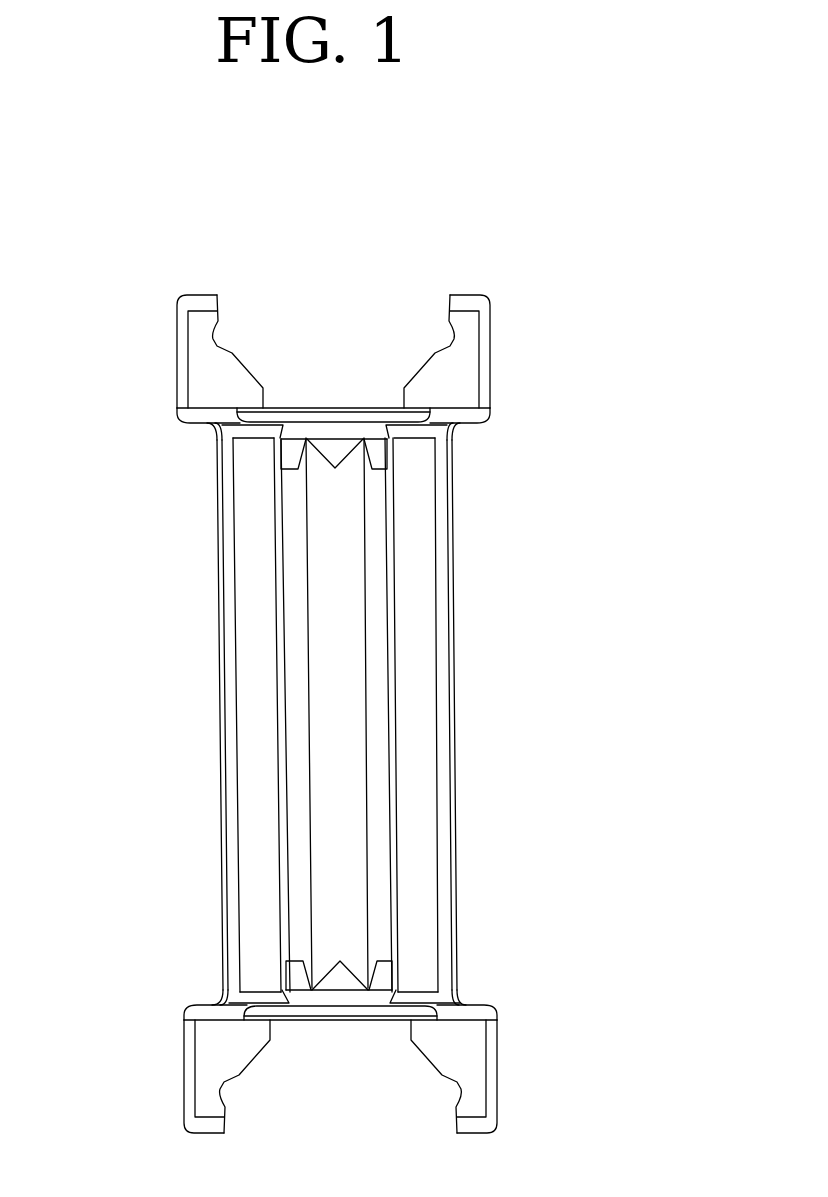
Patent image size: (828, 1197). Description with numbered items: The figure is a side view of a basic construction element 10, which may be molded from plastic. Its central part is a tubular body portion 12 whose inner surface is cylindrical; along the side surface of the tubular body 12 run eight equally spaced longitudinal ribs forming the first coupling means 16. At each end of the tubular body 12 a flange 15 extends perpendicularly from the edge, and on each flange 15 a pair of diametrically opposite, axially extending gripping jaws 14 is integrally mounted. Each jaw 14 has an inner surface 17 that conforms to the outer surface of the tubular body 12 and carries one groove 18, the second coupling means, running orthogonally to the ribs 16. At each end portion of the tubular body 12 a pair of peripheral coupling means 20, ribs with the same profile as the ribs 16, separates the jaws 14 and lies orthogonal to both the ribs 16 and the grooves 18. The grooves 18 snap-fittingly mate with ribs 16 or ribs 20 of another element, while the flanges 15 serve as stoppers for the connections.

The basic construction element 10 is at (522, 388).
The tubular body portion 12 is at (418, 686).
The gripping jaws 14 is at (212, 385).
The flange 15 is at (195, 423).
The first coupling means 16 is at (258, 686).
The inner surface 17 is at (440, 333).
The groove 18 is at (225, 338).
The peripheral coupling means 20 is at (380, 455).